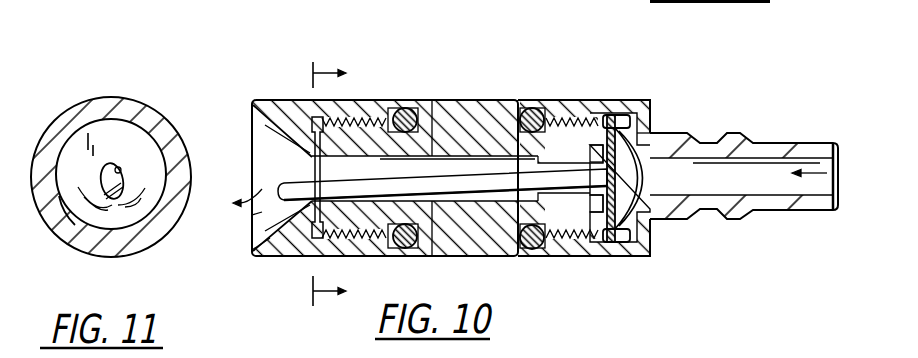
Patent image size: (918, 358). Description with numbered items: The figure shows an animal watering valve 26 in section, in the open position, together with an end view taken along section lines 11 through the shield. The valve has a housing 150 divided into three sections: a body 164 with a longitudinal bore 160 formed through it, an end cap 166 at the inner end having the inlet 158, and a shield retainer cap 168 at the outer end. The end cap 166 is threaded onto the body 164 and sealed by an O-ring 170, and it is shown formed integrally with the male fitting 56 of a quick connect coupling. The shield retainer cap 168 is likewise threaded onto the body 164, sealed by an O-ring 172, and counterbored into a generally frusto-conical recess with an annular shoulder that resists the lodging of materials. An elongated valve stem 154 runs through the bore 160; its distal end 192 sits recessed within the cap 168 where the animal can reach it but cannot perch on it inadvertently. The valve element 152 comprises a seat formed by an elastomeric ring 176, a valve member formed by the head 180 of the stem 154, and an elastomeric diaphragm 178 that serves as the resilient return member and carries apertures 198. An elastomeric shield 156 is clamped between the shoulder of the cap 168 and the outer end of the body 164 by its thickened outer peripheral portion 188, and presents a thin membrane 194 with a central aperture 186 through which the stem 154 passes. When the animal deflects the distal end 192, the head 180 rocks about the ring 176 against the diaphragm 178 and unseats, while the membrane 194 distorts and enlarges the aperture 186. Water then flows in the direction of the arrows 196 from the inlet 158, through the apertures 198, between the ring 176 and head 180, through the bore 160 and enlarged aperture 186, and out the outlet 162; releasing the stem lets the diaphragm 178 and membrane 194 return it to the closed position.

In FIG. 10, the section lines 11— 11 is at (332, 182).
In FIG. 11, the animal watering valve 26 is at (118, 95).
In FIG. 10, the animal watering valve 26 is at (540, 90).
In FIG. 10, the male fitting 56 is at (806, 138).
In FIG. 10, the housing 150 is at (457, 91).
In FIG. 10, the valve element 152 is at (592, 130).
In FIG. 11, the valve stem 154 is at (108, 203).
In FIG. 10, the valve stem 154 is at (480, 200).
In FIG. 11, the elastomeric shield 156 is at (88, 140).
In FIG. 10, the elastomeric shield 156 is at (307, 137).
In FIG. 10, the inlet 158 is at (853, 160).
In FIG. 10, the longitudinal bore 160 is at (432, 154).
In FIG. 10, the outlet 162 is at (228, 262).
In FIG. 10, the body 164 is at (494, 100).
In FIG. 10, the end cap 166 is at (651, 100).
In FIG. 11, the shield retainer cap 168 is at (142, 256).
In FIG. 10, the shield retainer cap 168 is at (258, 100).
In FIG. 10, the O-ring 170 is at (540, 238).
In FIG. 10, the O-ring 172 is at (410, 240).
In FIG. 10, the elastomeric ring 176 is at (590, 242).
In FIG. 10, the elastomeric diaphragm 178 is at (630, 226).
In FIG. 10, the head 180 is at (652, 132).
In FIG. 11, the central aperture 186 is at (123, 171).
In FIG. 10, the central aperture 186 is at (310, 173).
In FIG. 11, the outer peripheral portion 188 is at (50, 242).
In FIG. 10, the outer peripheral portion 188 is at (333, 120).
In FIG. 10, the distal end 192 is at (220, 238).
In FIG. 11, the membrane 194 is at (125, 142).
In FIG. 10, the membrane 194 is at (313, 222).
In FIG. 10, the flow direction 196 is at (858, 173).
In FIG. 10, the apertures 198 is at (640, 210).